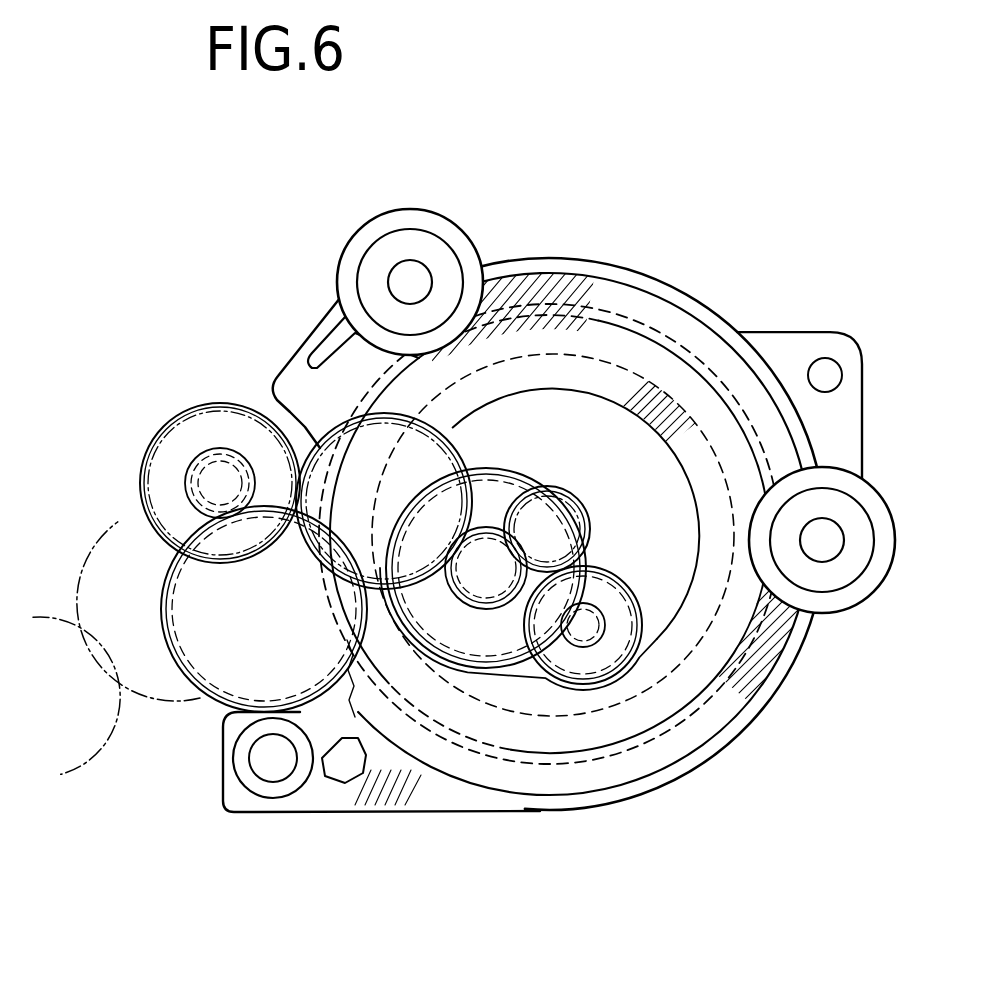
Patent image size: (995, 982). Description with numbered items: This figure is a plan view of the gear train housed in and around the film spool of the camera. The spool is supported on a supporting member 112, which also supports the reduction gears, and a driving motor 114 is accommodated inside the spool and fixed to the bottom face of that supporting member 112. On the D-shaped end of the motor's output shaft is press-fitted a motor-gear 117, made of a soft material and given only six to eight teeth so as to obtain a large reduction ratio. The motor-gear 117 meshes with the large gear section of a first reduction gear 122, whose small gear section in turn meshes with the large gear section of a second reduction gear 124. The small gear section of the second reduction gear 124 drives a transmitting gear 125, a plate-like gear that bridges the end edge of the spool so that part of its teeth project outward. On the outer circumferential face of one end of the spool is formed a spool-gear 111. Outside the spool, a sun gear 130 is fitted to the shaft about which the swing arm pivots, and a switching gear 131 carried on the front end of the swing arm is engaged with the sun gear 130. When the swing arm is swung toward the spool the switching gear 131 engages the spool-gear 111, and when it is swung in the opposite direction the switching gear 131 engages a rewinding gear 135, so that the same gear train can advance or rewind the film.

The spool-gear 111 is at (549, 510).
The supporting member 112 is at (567, 488).
The driving motor 114 is at (615, 581).
The motor-gear 117 is at (581, 524).
The first reduction gear 122 is at (597, 747).
The second reduction gear 124 is at (493, 696).
The transmitting gear 125 is at (342, 449).
The sun gear 130 is at (200, 436).
The switching gear 131 is at (252, 650).
The rewinding gear 135 is at (116, 690).